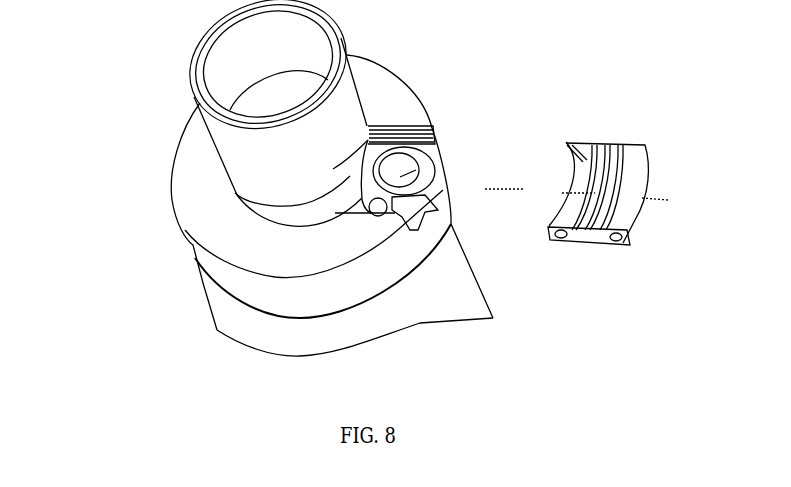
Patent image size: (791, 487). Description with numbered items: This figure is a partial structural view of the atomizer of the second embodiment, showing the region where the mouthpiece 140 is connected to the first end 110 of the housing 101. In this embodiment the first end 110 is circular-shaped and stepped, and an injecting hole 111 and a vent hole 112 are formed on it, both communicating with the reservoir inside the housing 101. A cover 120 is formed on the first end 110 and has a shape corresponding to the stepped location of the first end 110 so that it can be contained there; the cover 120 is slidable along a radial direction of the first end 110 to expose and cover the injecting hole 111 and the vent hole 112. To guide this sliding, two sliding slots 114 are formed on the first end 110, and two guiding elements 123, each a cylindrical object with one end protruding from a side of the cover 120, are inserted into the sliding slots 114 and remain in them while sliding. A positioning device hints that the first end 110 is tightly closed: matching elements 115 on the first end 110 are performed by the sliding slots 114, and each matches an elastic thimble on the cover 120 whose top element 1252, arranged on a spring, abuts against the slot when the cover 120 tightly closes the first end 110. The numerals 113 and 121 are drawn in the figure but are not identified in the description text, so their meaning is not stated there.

The housing 101 is at (423, 303).
The first end 110 is at (217, 267).
The injecting hole 111 is at (418, 200).
The vent hole 112 is at (420, 200).
The boss 113 is at (420, 202).
The sliding slot 114 is at (402, 127).
The matching element 115 is at (425, 137).
The cover 120 is at (567, 143).
The clamp grooves 121 is at (620, 147).
The guiding element 123 is at (566, 244).
The top element 1252 is at (624, 250).
The mouthpiece 140 is at (240, 158).